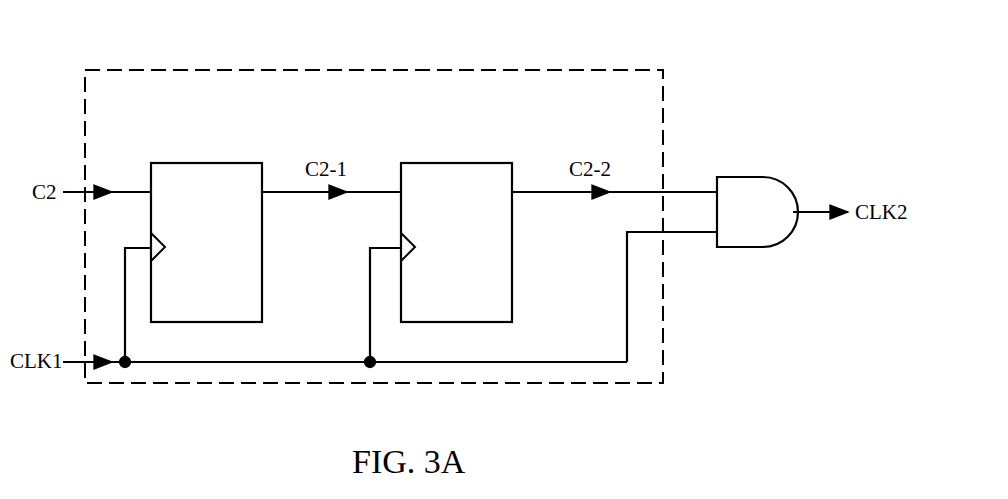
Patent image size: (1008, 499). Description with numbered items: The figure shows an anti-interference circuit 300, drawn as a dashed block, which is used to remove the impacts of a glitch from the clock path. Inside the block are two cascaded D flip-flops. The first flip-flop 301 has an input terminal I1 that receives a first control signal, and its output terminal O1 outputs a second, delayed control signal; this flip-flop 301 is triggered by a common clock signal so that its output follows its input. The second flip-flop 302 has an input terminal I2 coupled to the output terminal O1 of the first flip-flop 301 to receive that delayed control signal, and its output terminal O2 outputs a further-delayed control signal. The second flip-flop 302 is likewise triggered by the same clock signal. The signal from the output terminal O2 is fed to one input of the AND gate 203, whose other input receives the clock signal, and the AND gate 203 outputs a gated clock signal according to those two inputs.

The anti-interference circuit 300 is at (481, 70).
The flip-flop 301 is at (206, 163).
The flip-flop 302 is at (457, 163).
The AND gate 203 is at (735, 222).
The input terminal I1 is at (135, 191).
The output terminal O1 is at (280, 191).
The input terminal I2 is at (387, 191).
The output terminal O2 is at (543, 191).